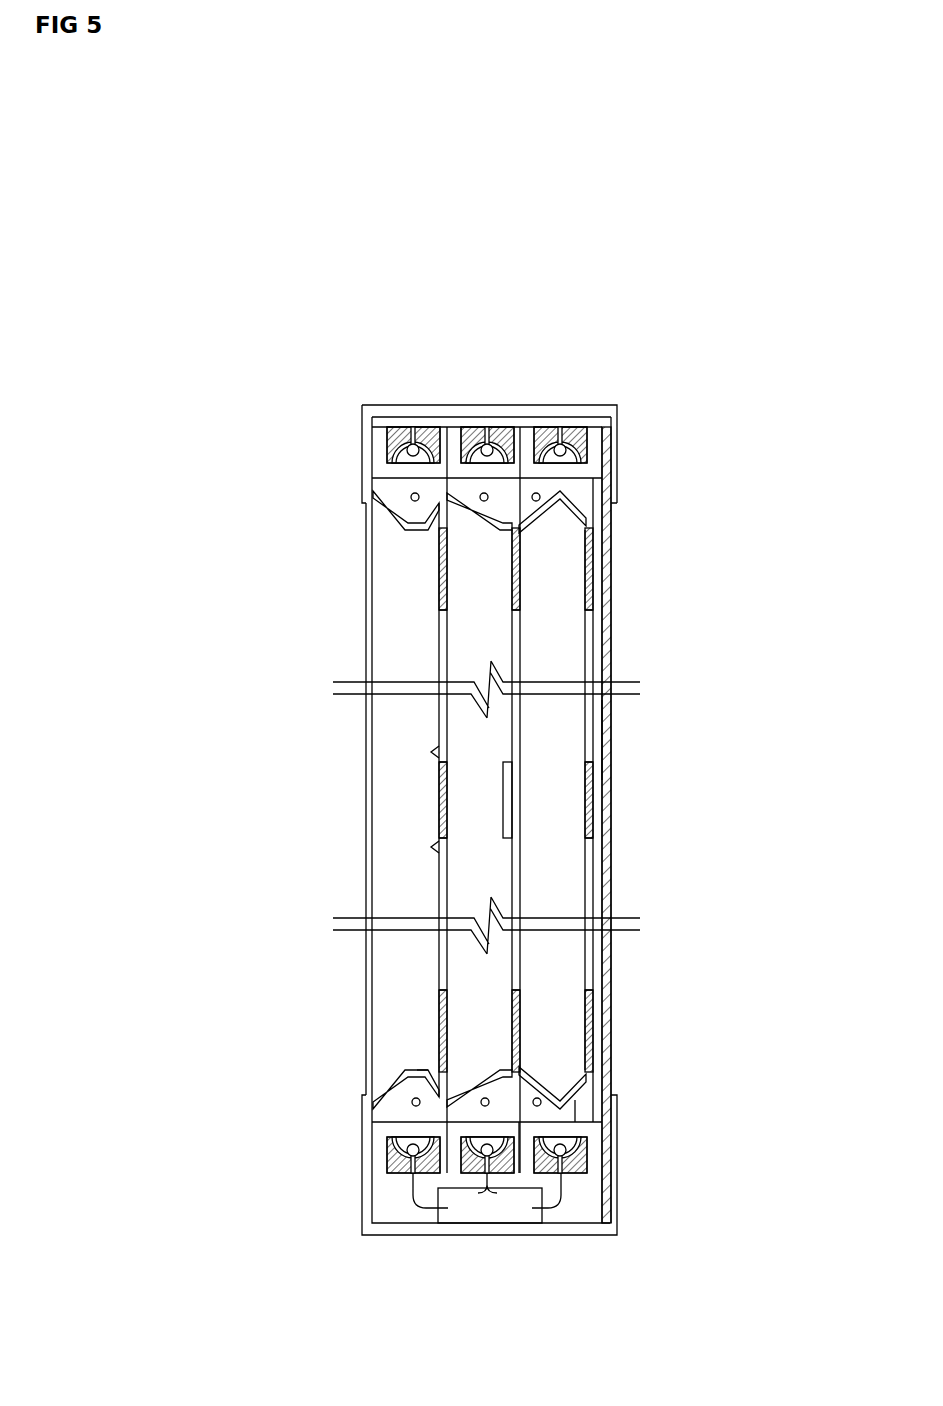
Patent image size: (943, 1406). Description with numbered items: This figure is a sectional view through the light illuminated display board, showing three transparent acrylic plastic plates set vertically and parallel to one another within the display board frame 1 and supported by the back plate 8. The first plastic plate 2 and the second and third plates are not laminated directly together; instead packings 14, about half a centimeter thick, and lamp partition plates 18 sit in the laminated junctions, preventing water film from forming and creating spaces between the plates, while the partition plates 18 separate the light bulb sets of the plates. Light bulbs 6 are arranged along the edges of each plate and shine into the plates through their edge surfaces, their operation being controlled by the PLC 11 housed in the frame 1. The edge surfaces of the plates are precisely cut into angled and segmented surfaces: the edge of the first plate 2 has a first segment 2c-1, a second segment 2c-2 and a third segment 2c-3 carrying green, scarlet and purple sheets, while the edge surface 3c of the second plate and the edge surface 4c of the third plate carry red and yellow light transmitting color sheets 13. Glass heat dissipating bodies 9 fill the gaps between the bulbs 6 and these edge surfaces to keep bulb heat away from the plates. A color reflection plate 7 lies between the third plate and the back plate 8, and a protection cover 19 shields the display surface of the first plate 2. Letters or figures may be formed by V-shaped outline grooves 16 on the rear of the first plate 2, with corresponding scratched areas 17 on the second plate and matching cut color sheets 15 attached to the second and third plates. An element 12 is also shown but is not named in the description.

The display board frame 1 is at (372, 480).
The first transparent acrylic plastic plate 2 is at (385, 562).
The angled and segmented edge surface of second plastic plate 3c is at (438, 1088).
The angled and segmented edge surface of third plastic plate 4c is at (560, 1085).
The light bulbs 6 is at (567, 1149).
The color reflection plate 7 is at (605, 528).
The back plate 8 is at (612, 738).
The heat dissipating bodies 9 is at (575, 1106).
The PLC (programmable logic controller) 11 is at (473, 1207).
The insulator 12 is at (587, 1140).
The light transmitting color sheets 13 is at (585, 1102).
The packings 14 is at (440, 604).
The color sheet 15 is at (439, 800).
The outline grooves 16 is at (432, 752).
The scratched areas 17 is at (508, 821).
The lamp partition plates 18 is at (447, 477).
The protection cover 19 is at (366, 968).
The first segment 2c-1 is at (395, 1090).
The second segment 2c-2 is at (432, 1066).
The third segment 2c-3 is at (447, 1122).